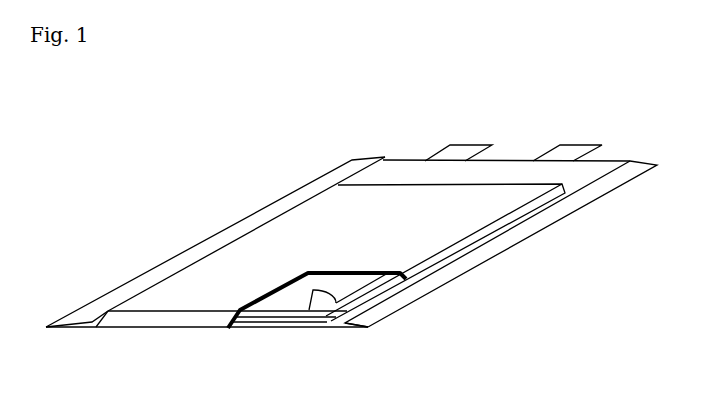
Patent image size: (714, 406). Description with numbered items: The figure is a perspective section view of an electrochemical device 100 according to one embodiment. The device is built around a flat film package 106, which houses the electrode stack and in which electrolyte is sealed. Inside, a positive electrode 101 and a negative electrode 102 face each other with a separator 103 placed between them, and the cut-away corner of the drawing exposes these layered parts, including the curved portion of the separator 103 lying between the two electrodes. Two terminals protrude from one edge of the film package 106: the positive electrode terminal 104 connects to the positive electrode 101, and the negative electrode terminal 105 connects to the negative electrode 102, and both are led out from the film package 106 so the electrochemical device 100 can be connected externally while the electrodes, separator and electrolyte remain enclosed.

The electrochemical device 100 is at (636, 59).
The positive electrode 101 is at (272, 301).
The negative electrode 102 is at (332, 327).
The separator 103 is at (303, 312).
The positive electrode terminal 104 is at (459, 152).
The negative electrode terminal 105 is at (569, 152).
The film package 106 is at (158, 316).